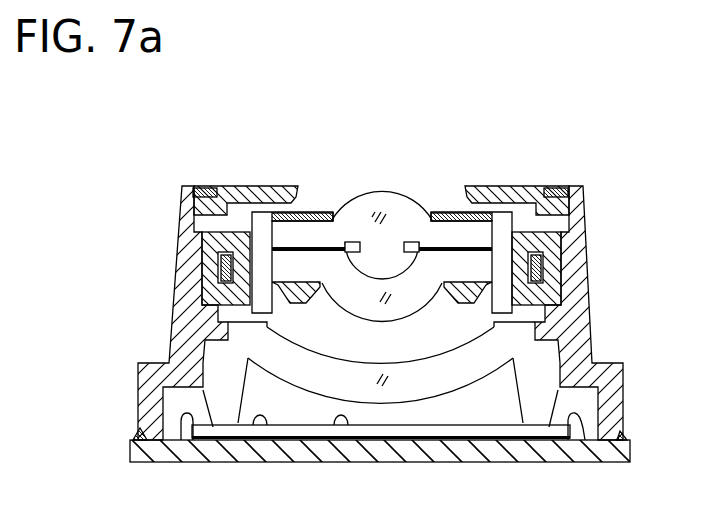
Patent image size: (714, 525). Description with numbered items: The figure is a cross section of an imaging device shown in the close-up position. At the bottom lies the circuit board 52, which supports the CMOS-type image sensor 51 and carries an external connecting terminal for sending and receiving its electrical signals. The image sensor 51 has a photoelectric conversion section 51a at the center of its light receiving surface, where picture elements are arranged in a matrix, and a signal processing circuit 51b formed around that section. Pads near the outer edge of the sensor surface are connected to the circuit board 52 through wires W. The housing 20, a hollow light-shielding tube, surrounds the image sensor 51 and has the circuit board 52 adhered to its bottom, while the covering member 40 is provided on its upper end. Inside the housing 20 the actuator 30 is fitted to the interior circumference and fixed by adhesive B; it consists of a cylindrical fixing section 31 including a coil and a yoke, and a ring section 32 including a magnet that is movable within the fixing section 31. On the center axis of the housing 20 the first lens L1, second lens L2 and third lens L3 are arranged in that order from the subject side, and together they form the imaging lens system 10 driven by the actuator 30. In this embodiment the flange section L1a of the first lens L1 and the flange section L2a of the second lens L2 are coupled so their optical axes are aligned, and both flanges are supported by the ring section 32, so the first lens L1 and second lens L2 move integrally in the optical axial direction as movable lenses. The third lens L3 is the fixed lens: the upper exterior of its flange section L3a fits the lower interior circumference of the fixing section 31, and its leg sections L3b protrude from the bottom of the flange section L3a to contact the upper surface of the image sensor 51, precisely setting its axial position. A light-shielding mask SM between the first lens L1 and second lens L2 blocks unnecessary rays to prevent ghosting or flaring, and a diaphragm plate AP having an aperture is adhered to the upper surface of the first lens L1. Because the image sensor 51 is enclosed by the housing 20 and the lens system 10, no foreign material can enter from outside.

The covering member 40 is at (233, 185).
The imaging lens system 10 is at (335, 183).
The light-shielding mask SM is at (357, 245).
The first lens L1 is at (399, 192).
The diaphragm plate AP is at (431, 212).
The flange section L1a is at (498, 223).
The adhesive B is at (586, 217).
The fixing section 31 is at (587, 242).
The flange section L2a is at (492, 273).
The actuator 30 is at (574, 290).
The ring section 32 is at (548, 303).
The housing 20 is at (623, 363).
The wires W is at (180, 423).
The flange section L3a is at (173, 340).
The leg sections L3b is at (220, 405).
The second lens L2 is at (422, 300).
The signal processing circuit 51b is at (255, 448).
The photoelectric conversion section 51a is at (338, 448).
The third lens L3 is at (400, 390).
The image sensor 51 is at (455, 432).
The circuit board 52 is at (522, 452).